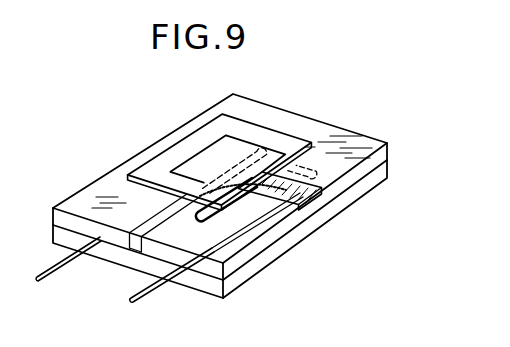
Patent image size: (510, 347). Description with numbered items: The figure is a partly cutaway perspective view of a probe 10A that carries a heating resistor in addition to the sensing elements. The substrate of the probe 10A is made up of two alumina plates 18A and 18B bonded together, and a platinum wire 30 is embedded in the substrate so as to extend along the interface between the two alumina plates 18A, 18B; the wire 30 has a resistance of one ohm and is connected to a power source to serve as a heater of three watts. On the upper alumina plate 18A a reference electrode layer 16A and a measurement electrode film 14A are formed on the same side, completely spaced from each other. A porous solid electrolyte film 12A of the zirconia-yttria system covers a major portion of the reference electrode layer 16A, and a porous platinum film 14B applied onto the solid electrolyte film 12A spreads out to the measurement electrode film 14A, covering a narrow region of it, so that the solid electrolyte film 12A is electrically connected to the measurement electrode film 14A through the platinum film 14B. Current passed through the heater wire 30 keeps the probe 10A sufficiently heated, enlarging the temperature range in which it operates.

The probe 10A is at (255, 194).
The solid electrolyte film 12A is at (283, 143).
The measurement electrode film 14A is at (313, 186).
The platinum film 14B is at (190, 162).
The reference electrode layer 16A is at (136, 205).
The alumina plate 18A is at (389, 153).
The alumina plate 18B is at (389, 176).
The platinum wire 30 is at (62, 265).